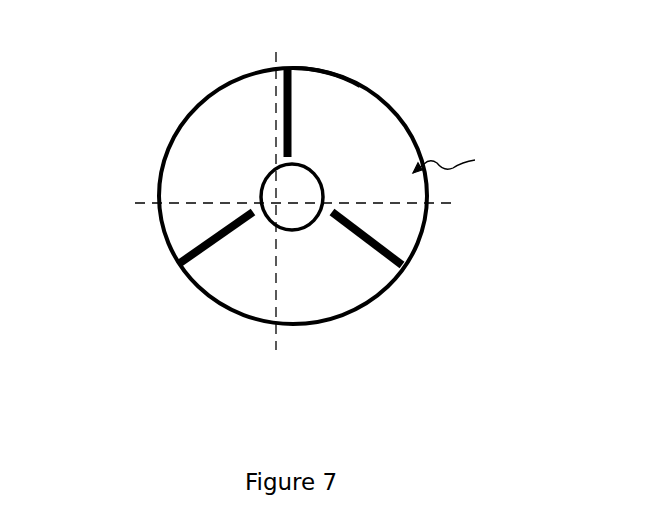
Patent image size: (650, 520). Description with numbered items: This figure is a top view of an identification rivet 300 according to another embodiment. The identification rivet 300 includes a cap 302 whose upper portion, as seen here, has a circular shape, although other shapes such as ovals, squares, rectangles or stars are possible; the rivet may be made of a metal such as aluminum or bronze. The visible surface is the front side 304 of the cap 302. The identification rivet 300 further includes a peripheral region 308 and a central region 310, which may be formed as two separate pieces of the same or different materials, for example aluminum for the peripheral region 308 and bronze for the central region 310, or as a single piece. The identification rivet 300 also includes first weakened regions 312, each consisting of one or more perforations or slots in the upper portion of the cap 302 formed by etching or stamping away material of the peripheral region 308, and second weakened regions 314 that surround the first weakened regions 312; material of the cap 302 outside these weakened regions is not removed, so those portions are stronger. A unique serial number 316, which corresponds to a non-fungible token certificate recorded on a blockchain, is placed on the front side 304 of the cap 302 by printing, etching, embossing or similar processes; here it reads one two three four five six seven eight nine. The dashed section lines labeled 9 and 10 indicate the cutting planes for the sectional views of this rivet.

The identification rivet 300 is at (87, 45).
The cap 302 is at (380, 93).
The front side 304 is at (466, 161).
The peripheral region 308 is at (197, 130).
The central region 310 is at (277, 231).
The first weakened region 312 is at (284, 76).
The second weakened region 314 is at (308, 80).
The unique serial number 316 is at (175, 226).
The section line 9-9' 9 is at (299, 205).
The section line 10-10' 10 is at (278, 201).